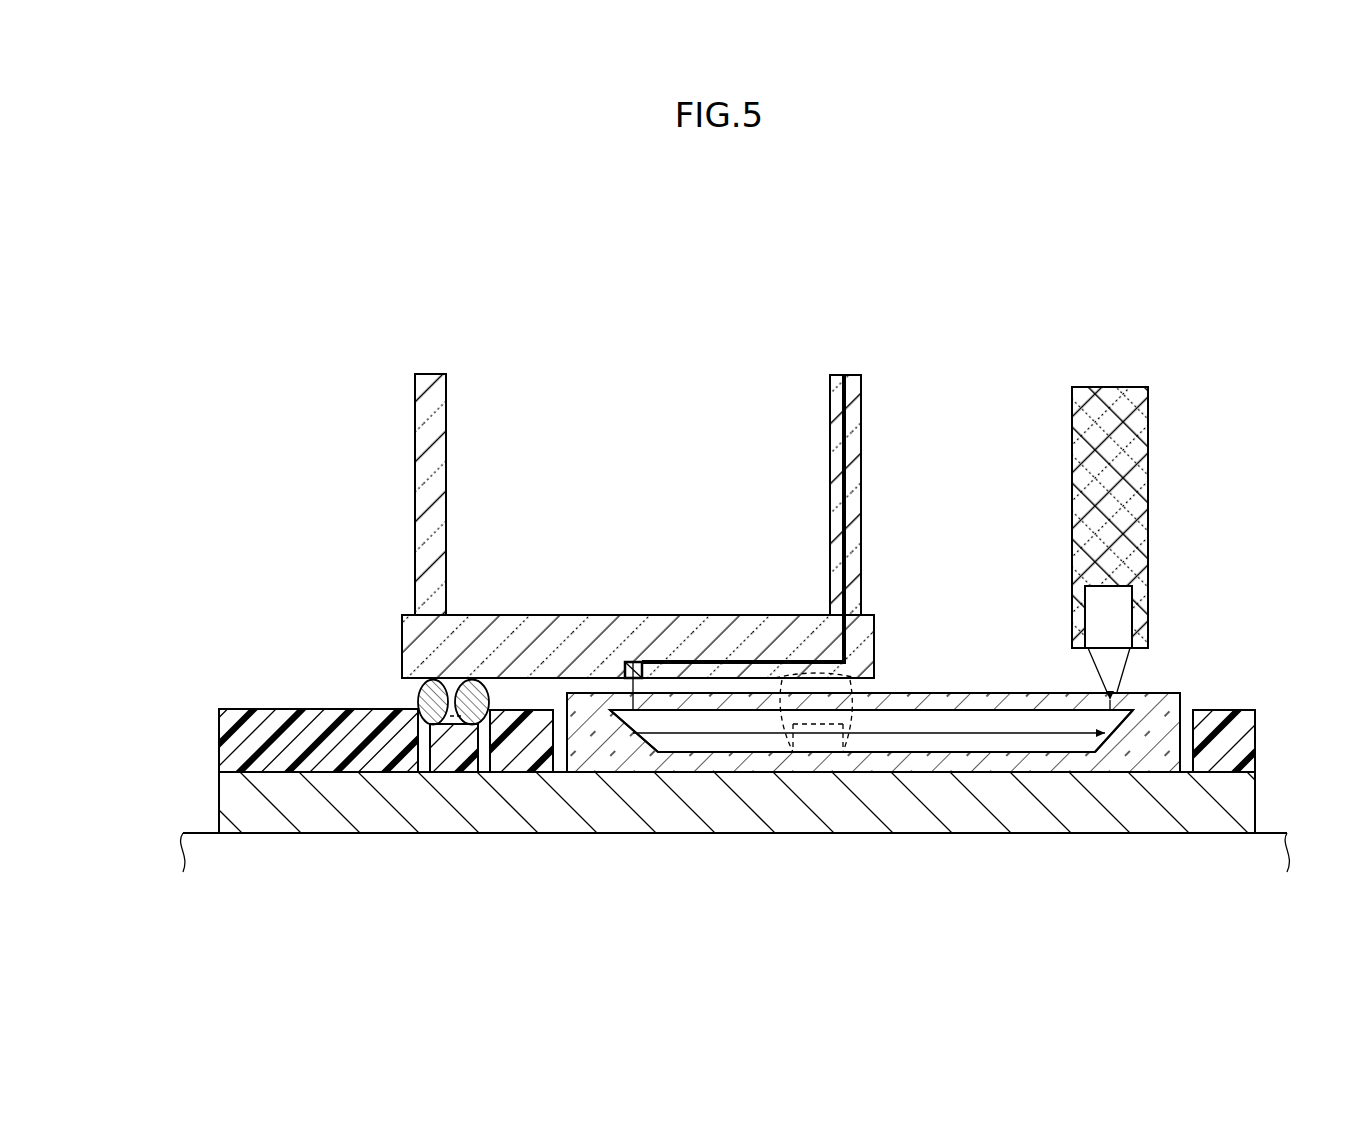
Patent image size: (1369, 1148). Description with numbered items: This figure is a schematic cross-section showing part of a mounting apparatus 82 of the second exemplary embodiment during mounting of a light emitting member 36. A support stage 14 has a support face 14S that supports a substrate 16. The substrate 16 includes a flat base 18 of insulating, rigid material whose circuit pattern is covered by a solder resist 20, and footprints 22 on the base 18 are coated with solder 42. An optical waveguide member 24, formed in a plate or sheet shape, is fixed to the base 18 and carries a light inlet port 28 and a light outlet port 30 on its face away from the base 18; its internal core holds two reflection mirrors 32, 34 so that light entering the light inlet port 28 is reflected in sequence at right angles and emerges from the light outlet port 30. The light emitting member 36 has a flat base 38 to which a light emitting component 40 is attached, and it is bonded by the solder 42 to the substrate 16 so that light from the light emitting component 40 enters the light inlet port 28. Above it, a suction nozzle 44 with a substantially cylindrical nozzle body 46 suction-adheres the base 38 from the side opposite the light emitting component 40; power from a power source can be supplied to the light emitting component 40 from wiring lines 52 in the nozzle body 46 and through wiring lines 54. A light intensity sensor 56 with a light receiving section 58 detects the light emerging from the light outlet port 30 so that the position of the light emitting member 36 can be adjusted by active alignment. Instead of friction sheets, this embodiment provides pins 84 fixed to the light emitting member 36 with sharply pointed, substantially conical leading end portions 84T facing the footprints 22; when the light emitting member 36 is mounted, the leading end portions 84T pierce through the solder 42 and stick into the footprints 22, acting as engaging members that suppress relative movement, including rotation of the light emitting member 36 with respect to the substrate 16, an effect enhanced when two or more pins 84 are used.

The mounting apparatus 82 is at (1097, 287).
The light emitting member 36 is at (401, 625).
The base 38 is at (563, 615).
The suction nozzle 44 is at (414, 410).
The nozzle body 46 is at (858, 465).
The wiring lines 52 is at (846, 410).
The wiring lines 54 is at (850, 640).
The light emitting component 40 is at (633, 662).
The light intensity sensor 56 is at (1150, 432).
The light receiving section 58 is at (1078, 658).
The support stage 14 is at (1284, 833).
The support face 14S is at (195, 831).
The substrate 16 is at (1265, 700).
The base 18 is at (219, 787).
The solder resist 20 is at (219, 718).
The footprints 22 is at (430, 737).
The light inlet port 28 is at (607, 692).
The optical waveguide member 24 is at (1172, 693).
The light outlet port 30 is at (1133, 700).
The reflection mirror 32 is at (615, 706).
The reflection mirror 34 is at (1100, 740).
The solder 42 is at (418, 703).
The pins 84 is at (428, 698).
The leading end portions 84T is at (457, 718).